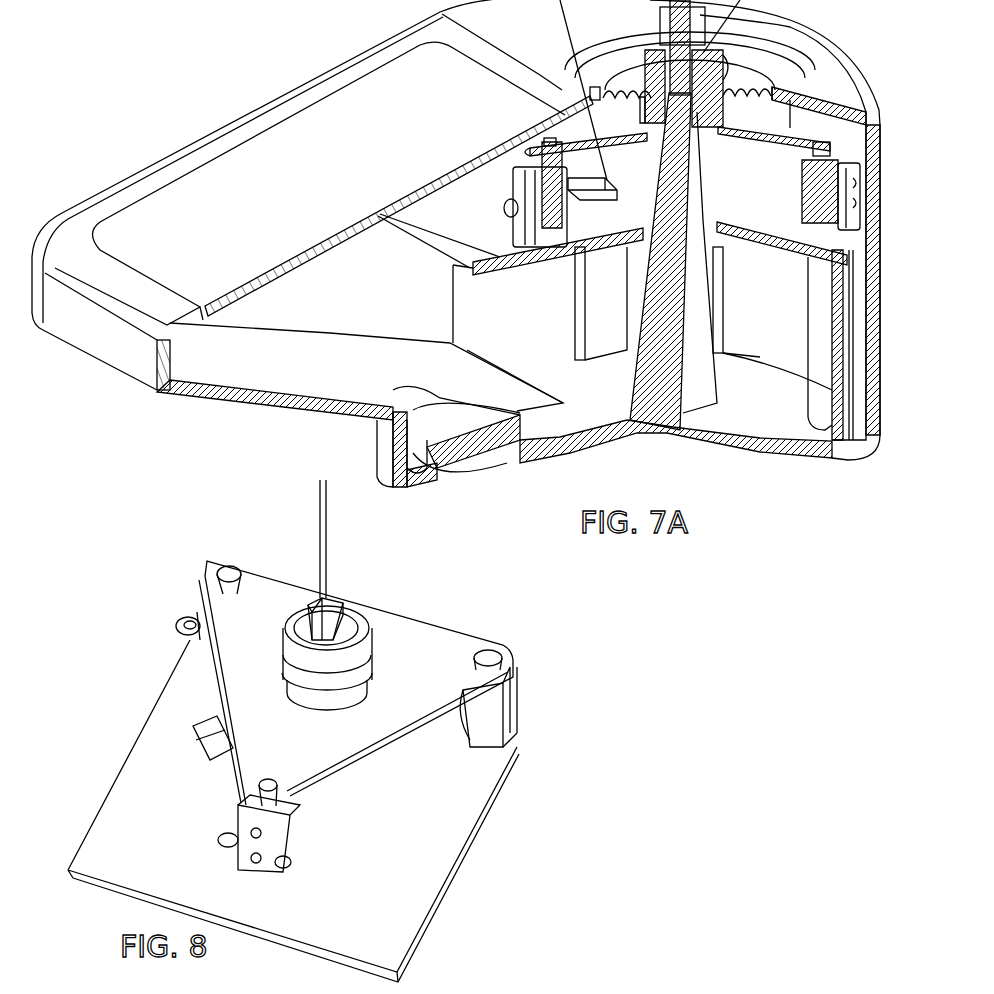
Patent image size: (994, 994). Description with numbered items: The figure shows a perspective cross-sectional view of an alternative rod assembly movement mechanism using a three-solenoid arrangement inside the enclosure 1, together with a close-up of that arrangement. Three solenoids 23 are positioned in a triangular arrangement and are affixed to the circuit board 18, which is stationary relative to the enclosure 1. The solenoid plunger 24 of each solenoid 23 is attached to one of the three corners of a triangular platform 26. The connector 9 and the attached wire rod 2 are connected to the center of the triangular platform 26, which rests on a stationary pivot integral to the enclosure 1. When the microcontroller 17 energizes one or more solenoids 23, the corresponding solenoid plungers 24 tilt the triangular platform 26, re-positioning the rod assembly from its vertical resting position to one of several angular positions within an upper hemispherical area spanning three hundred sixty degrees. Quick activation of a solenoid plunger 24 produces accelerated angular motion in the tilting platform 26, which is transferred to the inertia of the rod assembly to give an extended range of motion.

In FIG. 7A, the enclosure 1 is at (203, 147).
In FIG. 8, the wire rod 2 is at (332, 533).
In FIG. 8, the connector 9 is at (318, 602).
In FIG. 8, the microcontroller 17 is at (213, 743).
In FIG. 7A, the circuit board 18 is at (767, 210).
In FIG. 8, the circuit board 18 is at (402, 895).
In FIG. 7A, the solenoid 23 is at (513, 193).
In FIG. 8, the solenoid 23 is at (197, 613).
In FIG. 7A, the solenoid plunger 24 is at (548, 160).
In FIG. 8, the solenoid plunger 24 is at (228, 577).
In FIG. 7A, the triangular platform 26 is at (793, 127).
In FIG. 8, the triangular platform 26 is at (403, 653).